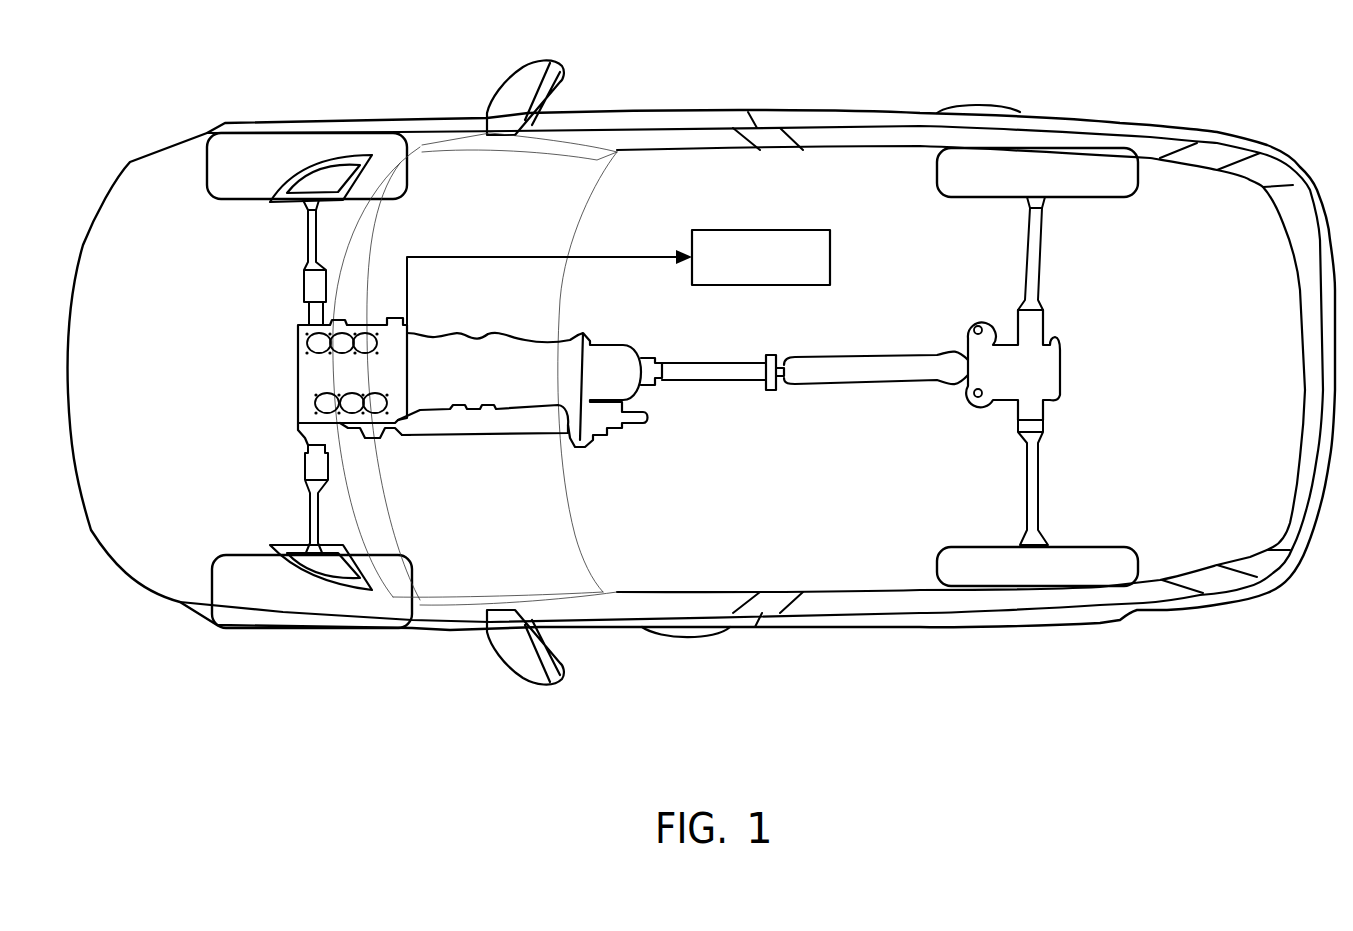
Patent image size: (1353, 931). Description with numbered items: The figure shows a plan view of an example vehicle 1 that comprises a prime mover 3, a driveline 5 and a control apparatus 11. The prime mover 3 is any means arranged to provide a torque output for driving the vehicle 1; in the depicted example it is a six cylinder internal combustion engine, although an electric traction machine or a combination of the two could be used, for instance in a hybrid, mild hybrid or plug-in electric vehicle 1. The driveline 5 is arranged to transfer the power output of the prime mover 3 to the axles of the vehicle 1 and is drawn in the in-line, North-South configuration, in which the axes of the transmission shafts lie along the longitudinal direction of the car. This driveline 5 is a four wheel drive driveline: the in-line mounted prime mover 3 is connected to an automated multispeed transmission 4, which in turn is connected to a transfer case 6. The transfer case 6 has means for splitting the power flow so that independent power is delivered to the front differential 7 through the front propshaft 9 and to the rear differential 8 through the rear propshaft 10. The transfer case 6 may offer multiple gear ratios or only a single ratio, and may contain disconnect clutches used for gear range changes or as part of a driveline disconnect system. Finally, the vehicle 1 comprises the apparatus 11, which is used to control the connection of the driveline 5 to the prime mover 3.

The vehicle 1 is at (822, 110).
The prime mover 3 is at (392, 425).
The automated multispeed transmission 4 is at (478, 355).
The driveline 5 is at (740, 387).
The transfer case 6 is at (618, 357).
The front differential 7 is at (302, 434).
The rear differential 8 is at (1062, 370).
The front propshaft 9 is at (472, 425).
The rear propshaft 10 is at (886, 372).
The apparatus 11 is at (832, 258).